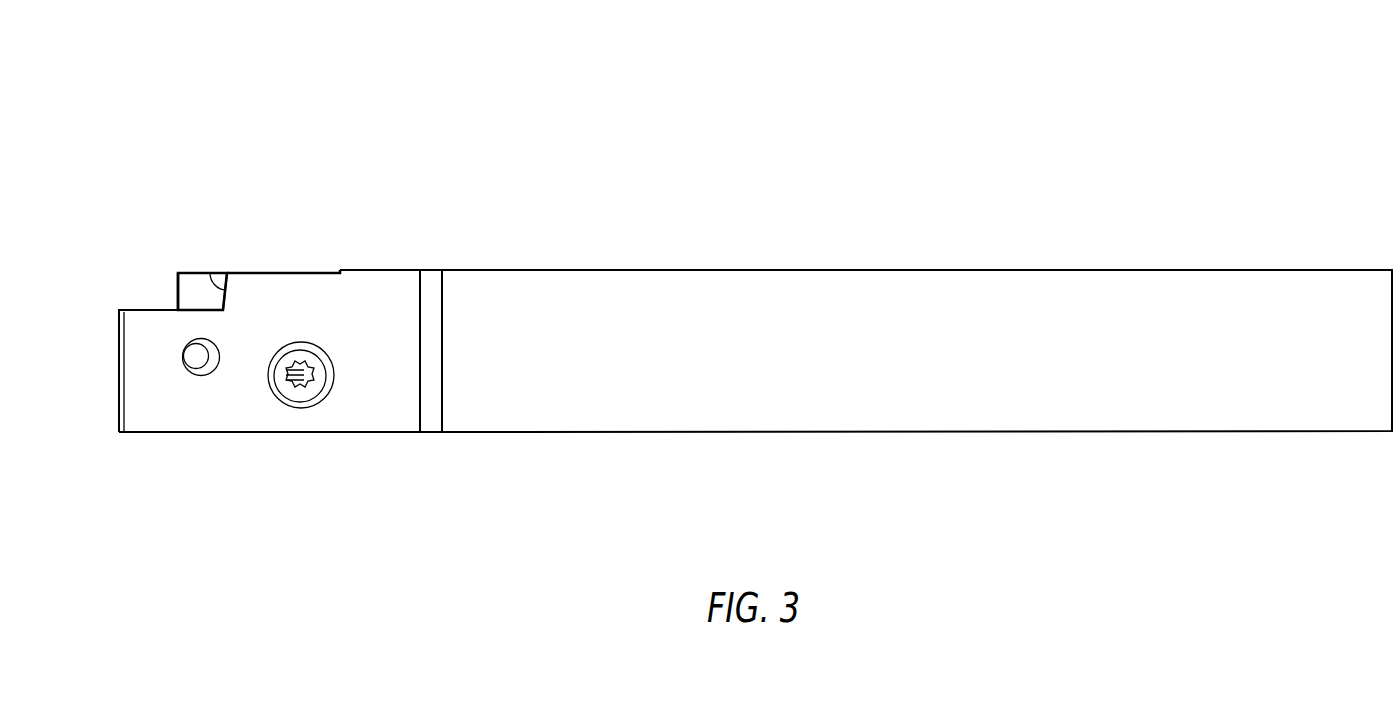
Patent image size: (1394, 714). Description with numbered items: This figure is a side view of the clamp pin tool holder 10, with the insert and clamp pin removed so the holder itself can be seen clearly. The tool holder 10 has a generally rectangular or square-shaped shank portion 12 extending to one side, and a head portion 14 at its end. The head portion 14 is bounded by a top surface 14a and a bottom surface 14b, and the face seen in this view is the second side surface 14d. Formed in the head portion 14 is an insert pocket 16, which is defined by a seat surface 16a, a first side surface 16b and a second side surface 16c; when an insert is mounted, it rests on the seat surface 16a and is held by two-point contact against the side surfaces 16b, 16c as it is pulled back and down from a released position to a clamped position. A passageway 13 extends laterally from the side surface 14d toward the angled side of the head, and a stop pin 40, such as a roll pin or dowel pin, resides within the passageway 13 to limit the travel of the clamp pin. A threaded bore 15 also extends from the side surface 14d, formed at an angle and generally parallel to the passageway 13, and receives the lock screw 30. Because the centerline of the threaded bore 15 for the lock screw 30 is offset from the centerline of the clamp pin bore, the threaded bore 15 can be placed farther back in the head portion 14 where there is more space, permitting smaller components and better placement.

The clamp pin tool holder 10 is at (942, 110).
The shank portion 12 is at (1186, 258).
The passageway 13 is at (212, 369).
The head portion 14 is at (324, 260).
The top surface 14a is at (295, 272).
The bottom surface 14b is at (390, 435).
The second side surface 14d is at (367, 332).
The threaded bore 15 is at (320, 385).
The insert pocket 16 is at (122, 300).
The seat surface 16a is at (157, 310).
The first side surface 16b is at (193, 285).
The second side surface 16c is at (208, 273).
The lock screw 30 is at (293, 395).
The stop pin 40 is at (193, 370).